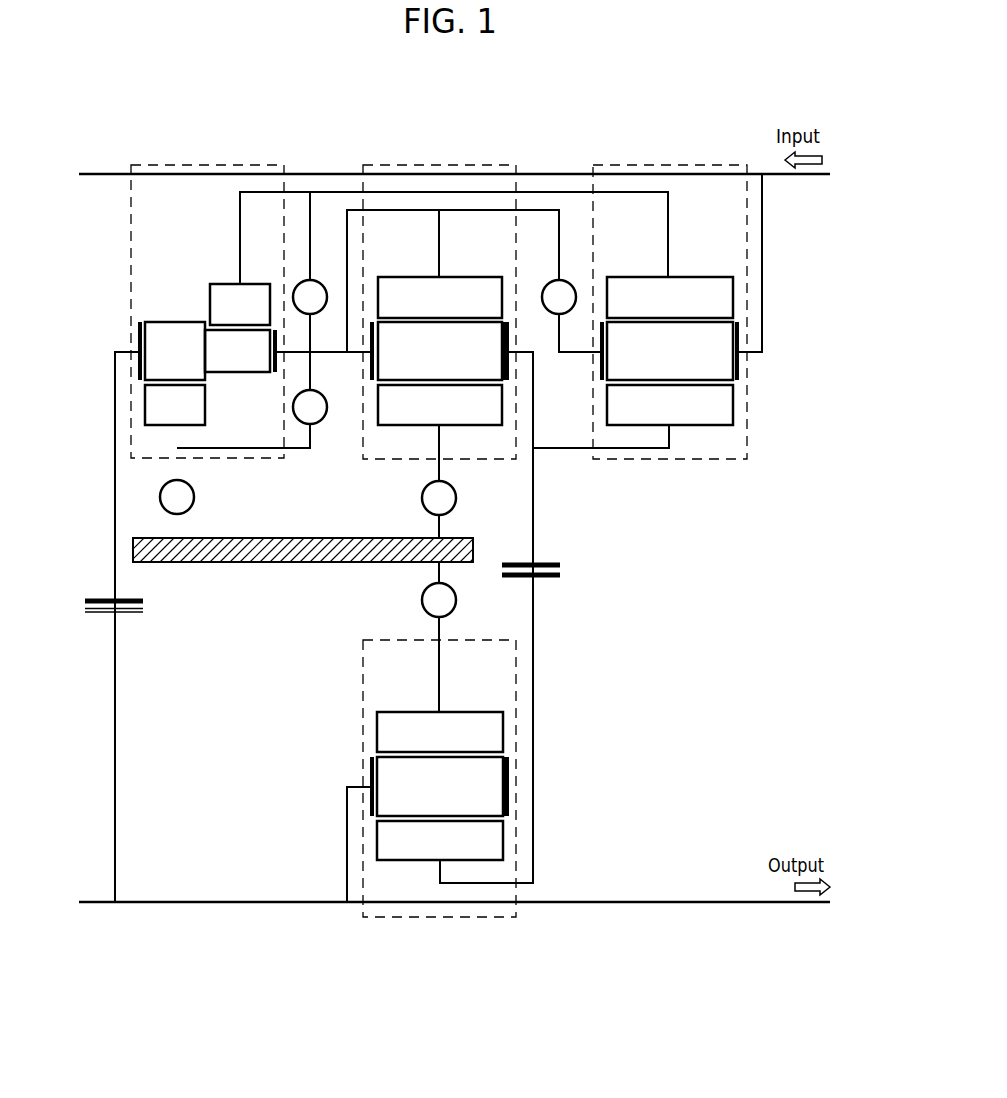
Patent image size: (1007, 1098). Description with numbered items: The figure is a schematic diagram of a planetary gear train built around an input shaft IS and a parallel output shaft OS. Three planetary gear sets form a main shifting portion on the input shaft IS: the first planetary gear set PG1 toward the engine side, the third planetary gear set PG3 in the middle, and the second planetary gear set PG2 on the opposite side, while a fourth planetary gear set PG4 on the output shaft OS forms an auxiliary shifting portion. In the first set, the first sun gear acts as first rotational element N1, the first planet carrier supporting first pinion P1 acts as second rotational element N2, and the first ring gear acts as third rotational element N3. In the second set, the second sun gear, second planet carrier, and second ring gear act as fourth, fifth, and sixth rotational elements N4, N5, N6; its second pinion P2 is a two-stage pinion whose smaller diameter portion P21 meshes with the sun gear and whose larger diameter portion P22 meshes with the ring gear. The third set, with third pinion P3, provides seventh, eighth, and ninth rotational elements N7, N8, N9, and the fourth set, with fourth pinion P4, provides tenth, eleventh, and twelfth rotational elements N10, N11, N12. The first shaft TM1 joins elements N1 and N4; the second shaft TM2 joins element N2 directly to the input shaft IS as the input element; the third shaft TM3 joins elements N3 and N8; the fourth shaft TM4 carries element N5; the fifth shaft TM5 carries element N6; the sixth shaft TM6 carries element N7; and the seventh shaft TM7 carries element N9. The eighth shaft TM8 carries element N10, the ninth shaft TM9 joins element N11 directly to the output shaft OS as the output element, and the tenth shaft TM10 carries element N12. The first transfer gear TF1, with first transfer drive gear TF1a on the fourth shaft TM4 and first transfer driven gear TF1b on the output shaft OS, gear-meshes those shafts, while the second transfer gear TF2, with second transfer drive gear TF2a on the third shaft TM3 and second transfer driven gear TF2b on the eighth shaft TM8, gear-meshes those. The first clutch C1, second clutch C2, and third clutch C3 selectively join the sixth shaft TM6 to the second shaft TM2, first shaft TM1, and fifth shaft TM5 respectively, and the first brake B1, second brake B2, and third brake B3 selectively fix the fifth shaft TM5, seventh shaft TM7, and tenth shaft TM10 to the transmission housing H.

The first planetary gear set PG1 is at (703, 153).
The second planetary gear set PG2 is at (243, 153).
The third planetary gear set PG3 is at (479, 153).
The fourth planetary gear set PG4 is at (530, 692).
The first rotational element N1 is at (670, 297).
The second rotational element N2 is at (601, 322).
The third rotational element N3 is at (670, 405).
The fourth rotational element N4 is at (240, 304).
The fifth rotational element N5 is at (141, 322).
The sixth rotational element N6 is at (175, 405).
The seventh rotational element N7 is at (440, 297).
The eighth rotational element N8 is at (372, 322).
The ninth rotational element N9 is at (440, 405).
The tenth rotational element N10 is at (440, 840).
The eleventh rotational element N11 is at (372, 758).
The twelfth rotational element N12 is at (440, 732).
The first pinion P1 is at (673, 351).
The second pinion P2 is at (211, 351).
The smaller diameter portion P21 is at (241, 351).
The larger diameter portion P22 is at (175, 351).
The third pinion P3 is at (443, 351).
The fourth pinion P4 is at (443, 786).
The first shaft TM1 is at (552, 180).
The second shaft TM2 is at (772, 286).
The third shaft TM3 is at (571, 464).
The fourth shaft TM4 is at (108, 374).
The fifth shaft TM5 is at (296, 466).
The sixth shaft TM6 is at (397, 197).
The seventh shaft TM7 is at (425, 470).
The eighth shaft TM8 is at (550, 765).
The ninth shaft TM9 is at (335, 822).
The tenth shaft TM10 is at (421, 622).
The first clutch C1 is at (559, 297).
The second clutch C2 is at (310, 297).
The third clutch C3 is at (310, 407).
The first brake B1 is at (177, 497).
The second brake B2 is at (439, 498).
The third brake B3 is at (439, 600).
The first transfer gear TF1 is at (165, 607).
The first transfer drive gear TF1a is at (148, 602).
The first transfer driven gear TF1b is at (148, 611).
The second transfer gear TF2 is at (581, 575).
The second transfer drive gear TF2a is at (562, 566).
The second transfer driven gear TF2b is at (562, 576).
The transmission housing H is at (291, 563).
The input shaft IS is at (792, 176).
The output shaft OS is at (792, 904).